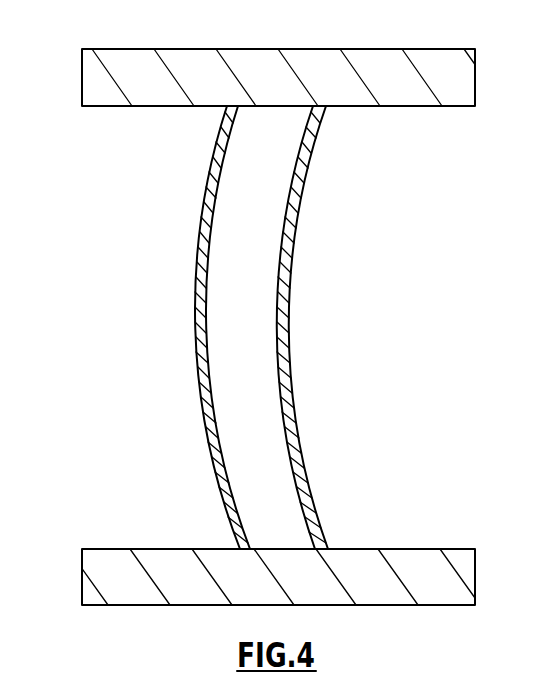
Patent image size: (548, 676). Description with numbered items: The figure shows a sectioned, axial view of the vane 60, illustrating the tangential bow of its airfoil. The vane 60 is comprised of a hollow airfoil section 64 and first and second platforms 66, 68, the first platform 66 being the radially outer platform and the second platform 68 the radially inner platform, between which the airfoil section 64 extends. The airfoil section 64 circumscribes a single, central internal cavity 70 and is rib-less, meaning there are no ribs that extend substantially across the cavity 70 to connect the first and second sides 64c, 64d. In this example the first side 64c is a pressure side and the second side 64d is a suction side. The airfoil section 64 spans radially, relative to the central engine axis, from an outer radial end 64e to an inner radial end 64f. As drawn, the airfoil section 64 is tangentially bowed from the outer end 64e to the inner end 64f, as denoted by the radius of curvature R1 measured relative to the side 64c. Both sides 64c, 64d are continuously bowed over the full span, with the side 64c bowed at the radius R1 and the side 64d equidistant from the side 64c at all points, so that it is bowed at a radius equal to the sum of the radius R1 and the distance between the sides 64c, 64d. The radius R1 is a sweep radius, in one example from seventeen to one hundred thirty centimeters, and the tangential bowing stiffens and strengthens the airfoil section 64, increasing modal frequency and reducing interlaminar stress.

The vane 60 is at (120, 490).
The airfoil section 64 is at (70, 105).
The first side 64c is at (296, 228).
The second side 64d is at (200, 243).
The outer radial end 64e is at (262, 106).
The inner radial end 64f is at (297, 549).
The first platform 66 is at (428, 49).
The second platform 68 is at (437, 549).
The internal cavity 70 is at (320, 150).
The radius of curvature R1 is at (302, 307).